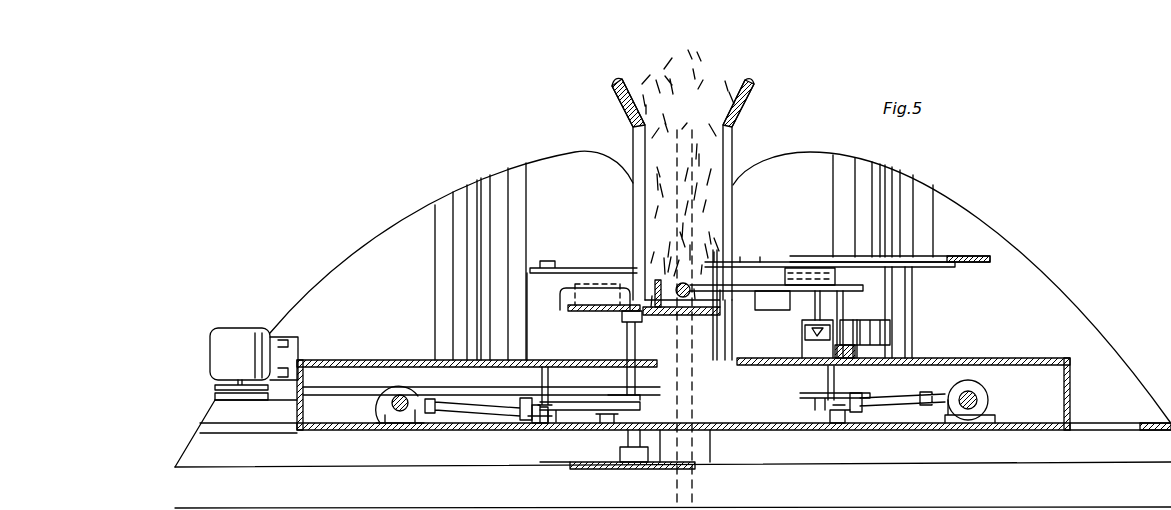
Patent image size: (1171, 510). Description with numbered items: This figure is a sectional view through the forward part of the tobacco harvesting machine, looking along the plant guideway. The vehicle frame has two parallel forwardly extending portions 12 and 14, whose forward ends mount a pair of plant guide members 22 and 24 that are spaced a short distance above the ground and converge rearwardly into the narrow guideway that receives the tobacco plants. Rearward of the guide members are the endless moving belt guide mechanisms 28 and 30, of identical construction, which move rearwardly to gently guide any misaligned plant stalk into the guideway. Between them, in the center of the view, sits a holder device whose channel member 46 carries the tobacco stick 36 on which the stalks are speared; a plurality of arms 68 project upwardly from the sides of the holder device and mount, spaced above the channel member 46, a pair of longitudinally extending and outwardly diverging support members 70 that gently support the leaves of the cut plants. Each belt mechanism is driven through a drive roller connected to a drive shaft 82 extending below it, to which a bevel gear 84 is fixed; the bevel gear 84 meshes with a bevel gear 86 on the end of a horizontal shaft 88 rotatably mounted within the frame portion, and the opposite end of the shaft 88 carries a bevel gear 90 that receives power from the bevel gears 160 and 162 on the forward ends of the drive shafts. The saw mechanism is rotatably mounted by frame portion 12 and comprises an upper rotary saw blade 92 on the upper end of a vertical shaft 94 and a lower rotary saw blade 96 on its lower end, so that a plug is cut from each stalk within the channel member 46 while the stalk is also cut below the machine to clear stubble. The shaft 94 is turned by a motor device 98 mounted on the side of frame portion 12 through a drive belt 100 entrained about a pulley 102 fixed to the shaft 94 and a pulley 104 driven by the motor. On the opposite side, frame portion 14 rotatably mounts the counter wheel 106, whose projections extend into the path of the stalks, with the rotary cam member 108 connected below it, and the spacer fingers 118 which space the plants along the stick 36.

The forwardly extending frame portion 12 is at (415, 358).
The forwardly extending frame portion 14 is at (950, 357).
The plant guide member 22 is at (430, 205).
The plant guide member 24 is at (992, 226).
The endless moving belt guide mechanism 28 is at (527, 287).
The endless moving belt guide mechanism 30 is at (768, 380).
The tobacco stick 36 is at (686, 283).
The channel member 46 is at (665, 318).
The arms 68 is at (733, 160).
The support members 70 is at (752, 100).
The drive shaft 82 is at (560, 418).
The bevel gear 84 is at (530, 422).
The bevel gear 86 is at (528, 400).
The horizontal shaft 88 is at (467, 414).
The bevel gear 90 is at (417, 418).
The upper rotary saw blade 92 is at (573, 302).
The vertical shaft 94 is at (624, 344).
The lower rotary saw blade 96 is at (605, 470).
The motor device 98 is at (218, 344).
The drive belt 100 is at (338, 384).
The pulley 102 is at (658, 397).
The pulley 104 is at (230, 396).
The counter wheel 106 is at (920, 260).
The rotary cam member 108 is at (906, 310).
The spacer fingers 118 is at (745, 282).
The bevel gear 160 is at (980, 394).
The bevel gear 162 is at (390, 383).